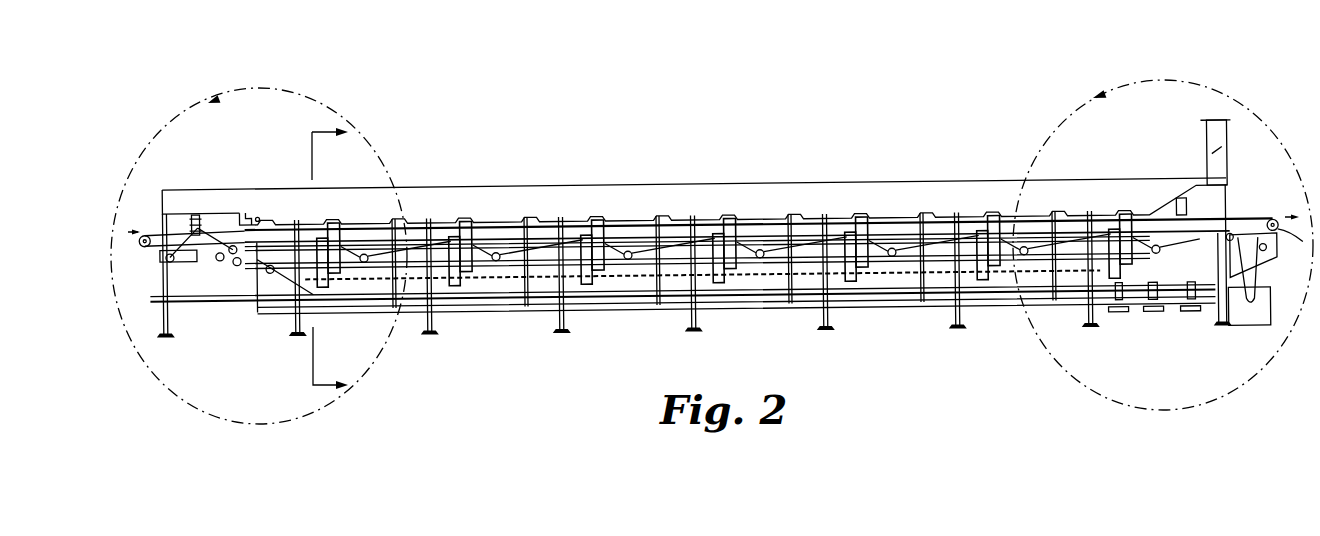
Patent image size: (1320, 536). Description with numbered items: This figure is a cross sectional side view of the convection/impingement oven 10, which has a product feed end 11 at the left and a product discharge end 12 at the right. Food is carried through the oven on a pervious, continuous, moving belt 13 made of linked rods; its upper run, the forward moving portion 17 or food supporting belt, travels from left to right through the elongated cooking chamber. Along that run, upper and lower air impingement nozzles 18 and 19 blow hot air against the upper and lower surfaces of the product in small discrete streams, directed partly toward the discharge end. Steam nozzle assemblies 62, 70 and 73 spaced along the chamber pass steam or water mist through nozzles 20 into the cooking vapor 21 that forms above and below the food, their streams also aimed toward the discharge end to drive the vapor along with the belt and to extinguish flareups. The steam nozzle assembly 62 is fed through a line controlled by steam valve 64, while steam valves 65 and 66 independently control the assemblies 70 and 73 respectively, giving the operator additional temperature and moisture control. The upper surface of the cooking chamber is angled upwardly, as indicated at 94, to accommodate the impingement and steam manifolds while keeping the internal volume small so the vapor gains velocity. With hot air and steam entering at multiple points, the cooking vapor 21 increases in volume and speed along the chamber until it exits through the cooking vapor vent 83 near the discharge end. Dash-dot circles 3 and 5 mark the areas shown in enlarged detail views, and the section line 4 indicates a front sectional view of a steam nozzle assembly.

The detail circle of feed end (FIG. 3) 3 is at (118, 182).
The section line 4- 4 is at (317, 260).
The detail circle of discharge end (FIG. 5) 5 is at (1023, 172).
The convection/impingement oven 10 is at (557, 107).
The product feed end 11 is at (150, 233).
The product discharge end 12 is at (1233, 217).
The belt 13 is at (288, 228).
The forward moving portion of the belt 17 is at (490, 220).
The upper air impingement nozzle 18 is at (340, 220).
The lower air impingement nozzle 19 is at (320, 236).
The nozzles 20 is at (256, 208).
The cooking vapor 21 is at (637, 227).
The steam nozzle assembly 62 is at (260, 212).
The steam valve 64 is at (1110, 310).
The steam valve 65 is at (1147, 310).
The steam valve 66 is at (1193, 310).
The steam nozzle assembly 70 is at (393, 220).
The steam nozzle assemblies 73 is at (787, 217).
The cooking vapor vent 83 is at (1207, 142).
The upward angling of the cooking chamber upper surface 94 is at (453, 230).